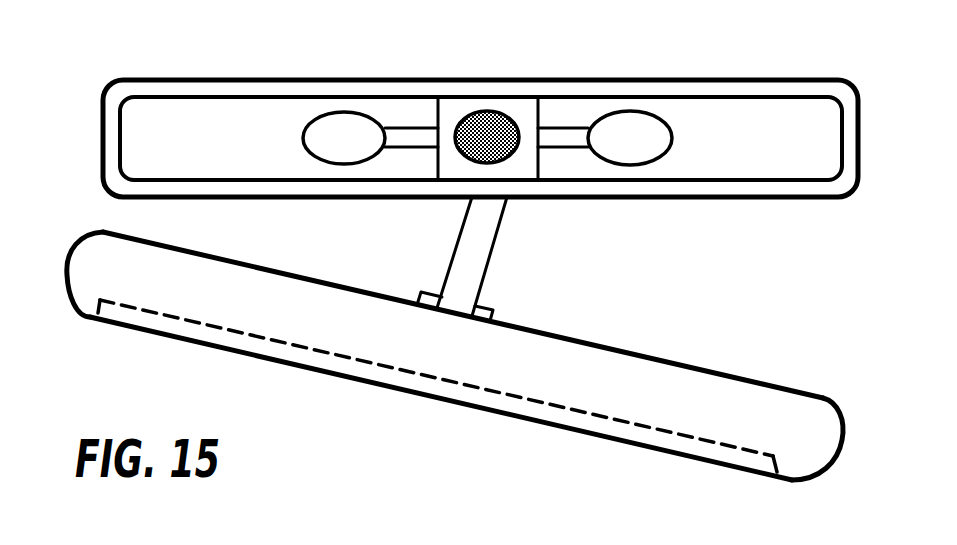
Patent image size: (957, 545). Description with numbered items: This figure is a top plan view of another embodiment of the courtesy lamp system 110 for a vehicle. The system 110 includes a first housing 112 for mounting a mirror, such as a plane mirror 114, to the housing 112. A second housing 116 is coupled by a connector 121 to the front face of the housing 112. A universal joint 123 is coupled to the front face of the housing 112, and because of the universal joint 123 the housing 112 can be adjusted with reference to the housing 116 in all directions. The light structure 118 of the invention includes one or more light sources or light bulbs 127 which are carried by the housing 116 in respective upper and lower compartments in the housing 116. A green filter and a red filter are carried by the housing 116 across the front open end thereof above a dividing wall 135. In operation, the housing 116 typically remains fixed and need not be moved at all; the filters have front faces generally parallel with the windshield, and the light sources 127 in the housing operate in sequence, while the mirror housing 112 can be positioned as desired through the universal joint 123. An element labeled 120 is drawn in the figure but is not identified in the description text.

The courtesy lamp system 110 is at (455, 361).
The first housing 112 is at (413, 395).
The plane mirror 114 is at (520, 407).
The second housing 116 is at (372, 185).
The light structure 118 is at (388, 126).
The central pad 120 is at (482, 138).
The connector 121 is at (470, 230).
The universal joint 123 is at (480, 312).
The light source 127 is at (327, 140).
The dividing wall 135 is at (165, 138).